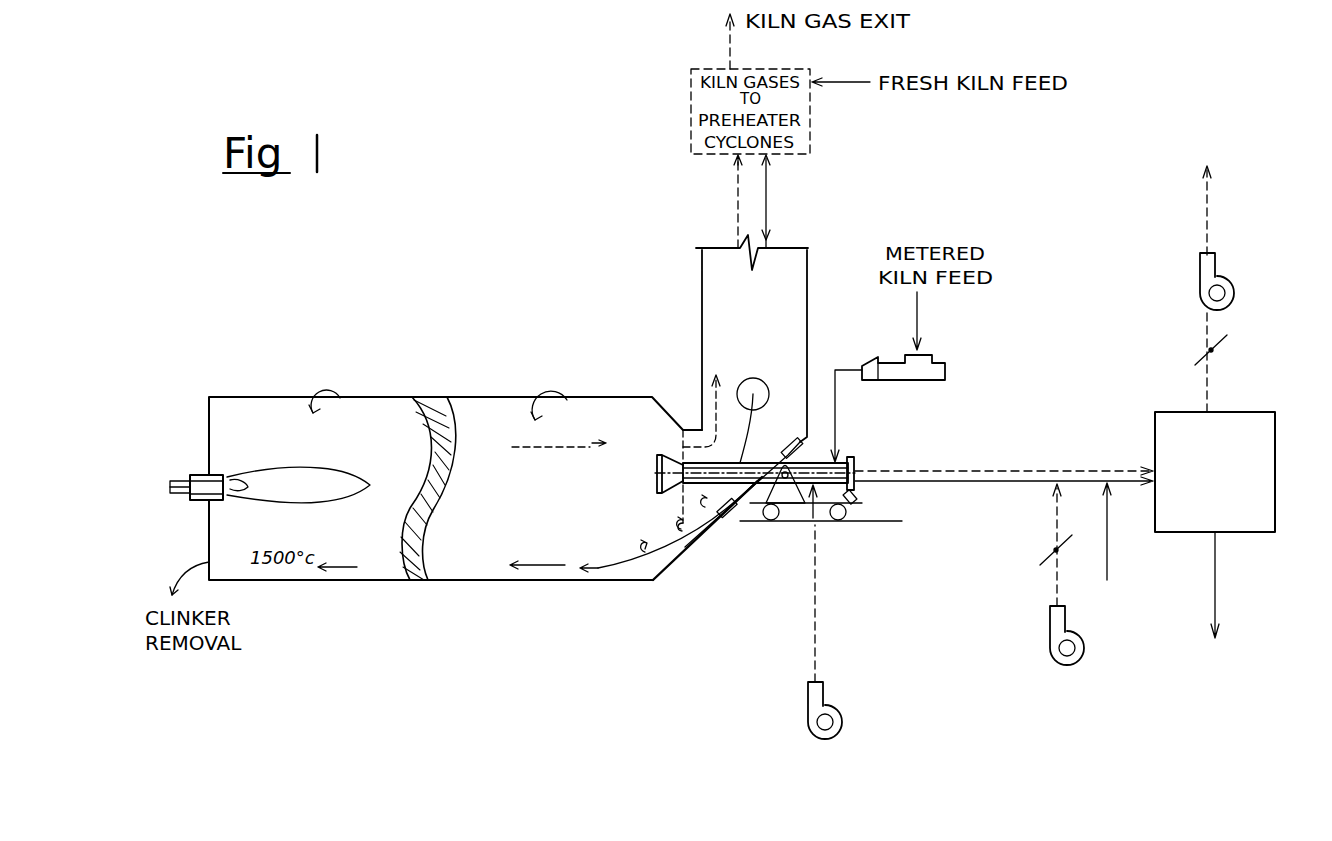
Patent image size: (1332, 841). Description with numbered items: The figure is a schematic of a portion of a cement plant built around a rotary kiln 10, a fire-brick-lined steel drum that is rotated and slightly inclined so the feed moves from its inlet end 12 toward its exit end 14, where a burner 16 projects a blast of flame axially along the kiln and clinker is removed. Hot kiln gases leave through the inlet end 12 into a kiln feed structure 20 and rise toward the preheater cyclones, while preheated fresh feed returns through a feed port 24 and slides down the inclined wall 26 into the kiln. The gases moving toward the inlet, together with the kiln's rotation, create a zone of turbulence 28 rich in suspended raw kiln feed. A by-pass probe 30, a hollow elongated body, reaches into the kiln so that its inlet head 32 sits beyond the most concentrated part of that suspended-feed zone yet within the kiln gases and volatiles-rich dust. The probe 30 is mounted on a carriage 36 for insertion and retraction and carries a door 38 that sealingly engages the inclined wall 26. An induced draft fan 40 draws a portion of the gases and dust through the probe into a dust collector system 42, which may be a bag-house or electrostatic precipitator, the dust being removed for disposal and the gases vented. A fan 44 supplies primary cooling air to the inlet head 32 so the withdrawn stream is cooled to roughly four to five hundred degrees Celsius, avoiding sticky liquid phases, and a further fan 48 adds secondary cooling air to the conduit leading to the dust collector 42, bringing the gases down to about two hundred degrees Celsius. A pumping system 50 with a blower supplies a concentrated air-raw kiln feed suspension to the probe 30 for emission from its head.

The rotary kiln 10 is at (465, 580).
The inlet end 12 is at (688, 548).
The exit end 14 is at (207, 536).
The burner 16 is at (200, 475).
The kiln feed structure 20 is at (702, 342).
The feed port 24 is at (760, 380).
The inclined wall 26 is at (727, 525).
The zone of turbulence 28 is at (634, 521).
The by-pass probe 30 is at (702, 462).
The inlet head 32 is at (660, 455).
The carriage 36 is at (850, 505).
The door 38 is at (735, 515).
The induced draft fan 40 is at (1200, 290).
The dust collector system 42 is at (1276, 447).
The fan 44 is at (808, 718).
The further fan 48 is at (1050, 644).
The pumping system 50 is at (945, 366).